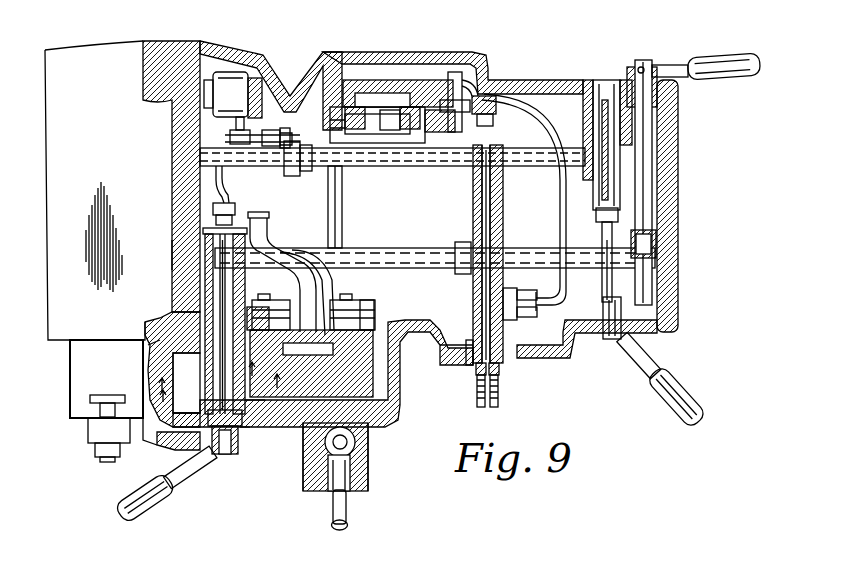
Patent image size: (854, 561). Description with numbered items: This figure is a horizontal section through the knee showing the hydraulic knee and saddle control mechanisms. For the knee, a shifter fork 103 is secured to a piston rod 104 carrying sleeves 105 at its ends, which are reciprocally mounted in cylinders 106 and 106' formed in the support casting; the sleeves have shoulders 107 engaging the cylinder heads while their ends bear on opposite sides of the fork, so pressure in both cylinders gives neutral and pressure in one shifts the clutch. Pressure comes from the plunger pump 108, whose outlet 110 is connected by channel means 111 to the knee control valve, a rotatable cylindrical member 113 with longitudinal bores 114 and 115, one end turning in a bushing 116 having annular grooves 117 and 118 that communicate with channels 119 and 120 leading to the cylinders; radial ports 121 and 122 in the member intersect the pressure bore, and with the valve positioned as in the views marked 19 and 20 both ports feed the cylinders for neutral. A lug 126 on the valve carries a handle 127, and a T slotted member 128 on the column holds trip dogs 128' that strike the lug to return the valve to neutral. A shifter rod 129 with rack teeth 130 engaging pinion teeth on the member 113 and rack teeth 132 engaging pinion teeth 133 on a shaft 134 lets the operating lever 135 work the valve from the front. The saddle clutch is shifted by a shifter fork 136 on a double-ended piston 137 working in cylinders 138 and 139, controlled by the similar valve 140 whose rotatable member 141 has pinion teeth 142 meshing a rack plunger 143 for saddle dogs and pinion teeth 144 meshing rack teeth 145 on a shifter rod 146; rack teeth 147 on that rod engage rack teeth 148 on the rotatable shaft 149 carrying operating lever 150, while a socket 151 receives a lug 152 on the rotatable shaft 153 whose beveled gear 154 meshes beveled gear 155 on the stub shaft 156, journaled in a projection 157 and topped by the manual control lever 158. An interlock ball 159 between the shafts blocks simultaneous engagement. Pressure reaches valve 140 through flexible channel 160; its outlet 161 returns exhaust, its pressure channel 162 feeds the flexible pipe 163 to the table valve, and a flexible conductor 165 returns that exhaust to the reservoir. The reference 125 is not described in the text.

The section line 19 is at (222, 392).
The section line 20 is at (202, 369).
The shifter fork 103 is at (266, 246).
The piston rod 104 is at (337, 300).
The sleeves 105 is at (283, 300).
The cylinder 106 is at (390, 312).
The cylinder 106' is at (126, 190).
The shoulders 107 is at (284, 290).
The plunger pump 108 is at (232, 78).
The outlet 110 is at (270, 128).
The channel means 111 is at (233, 201).
The rotatable cylindrical member 113 is at (240, 318).
The longitudinal bore 114 is at (224, 305).
The longitudinal bore 115 is at (215, 292).
The bushing 116 is at (250, 428).
The annular groove 117 is at (145, 448).
The annular groove 118 is at (173, 358).
The channel 119 is at (306, 424).
The channel 120 is at (255, 428).
The radial port 121 is at (245, 428).
The radial port 122 is at (150, 331).
The shoulder 125 is at (160, 350).
The lug 126 is at (168, 448).
The handle 127 is at (130, 496).
The T slotted member 128 is at (86, 380).
The trip dogs 128' is at (80, 440).
The shifter rod 129 is at (392, 258).
The rack teeth 130 is at (200, 257).
The rack teeth 132 is at (606, 241).
The pinion teeth 133 is at (652, 270).
The shaft 134 is at (647, 209).
The operating lever 135 is at (700, 67).
The shifter fork 136 is at (366, 166).
The double-ended piston 137 is at (400, 145).
The cylinder 138 is at (330, 116).
The cylinder 139 is at (415, 135).
The saddle control valve 140 is at (458, 275).
The rotatable member 141 is at (477, 221).
The pinion teeth 142 is at (470, 372).
The rack plunger 143 is at (452, 362).
The pinion teeth 144 is at (470, 164).
The rack teeth 145 is at (546, 154).
The shifter rod 146 is at (546, 150).
The rack teeth 147 is at (567, 125).
The rack teeth 148 is at (594, 189).
The rotatable shaft 149 is at (605, 284).
The operating lever 150 is at (655, 356).
The socket 151 is at (313, 165).
The lug 152 is at (320, 172).
The rotatable shaft 153 is at (336, 206).
The beveled gear 154 is at (360, 462).
The beveled gear 155 is at (368, 451).
The stub shaft 156 is at (352, 441).
The projection 157 is at (365, 480).
The manual control lever 158 is at (346, 528).
The ball 159 is at (612, 78).
The flexible channel 160 is at (483, 105).
The outlet 161 is at (497, 186).
The pressure channel 162 is at (486, 241).
The flexible pipe 163 is at (478, 399).
The flexible conductor 165 is at (500, 395).